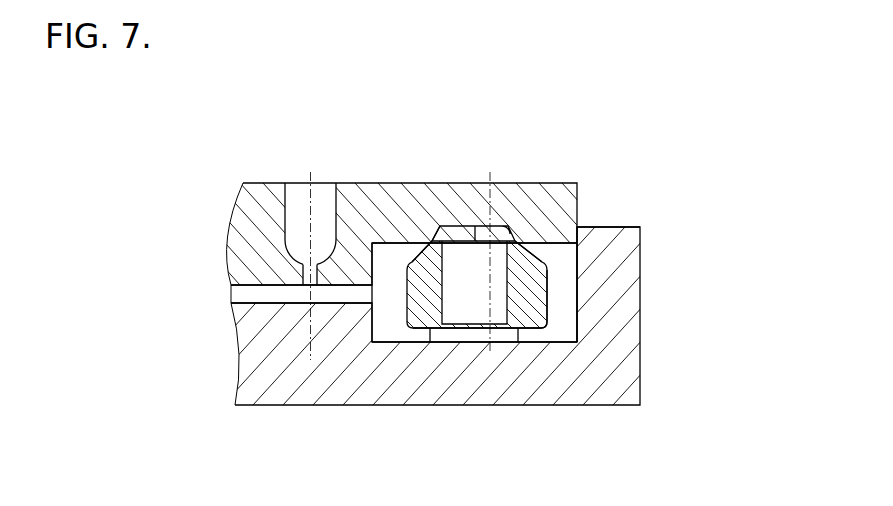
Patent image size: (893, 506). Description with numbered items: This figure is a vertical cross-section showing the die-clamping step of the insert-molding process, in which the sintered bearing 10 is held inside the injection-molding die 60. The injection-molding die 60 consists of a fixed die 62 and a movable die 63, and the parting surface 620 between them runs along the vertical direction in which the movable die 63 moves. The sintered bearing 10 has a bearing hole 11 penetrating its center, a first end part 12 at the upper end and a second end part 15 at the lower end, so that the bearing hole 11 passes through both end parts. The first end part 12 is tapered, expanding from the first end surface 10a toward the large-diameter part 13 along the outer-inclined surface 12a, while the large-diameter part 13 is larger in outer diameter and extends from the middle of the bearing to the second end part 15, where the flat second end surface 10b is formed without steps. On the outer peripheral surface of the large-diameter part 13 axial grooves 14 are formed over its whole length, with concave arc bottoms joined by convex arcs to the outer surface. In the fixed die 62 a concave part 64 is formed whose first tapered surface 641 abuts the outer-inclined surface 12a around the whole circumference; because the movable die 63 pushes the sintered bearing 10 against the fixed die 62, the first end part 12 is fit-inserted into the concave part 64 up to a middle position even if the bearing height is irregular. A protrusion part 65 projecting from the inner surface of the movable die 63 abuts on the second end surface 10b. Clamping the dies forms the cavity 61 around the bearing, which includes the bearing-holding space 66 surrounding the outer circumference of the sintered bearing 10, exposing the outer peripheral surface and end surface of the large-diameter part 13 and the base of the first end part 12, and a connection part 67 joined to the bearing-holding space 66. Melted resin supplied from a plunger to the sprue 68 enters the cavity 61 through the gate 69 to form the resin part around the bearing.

The sintered bearing 10 is at (540, 285).
The first end surface 10a is at (509, 246).
The second end surface 10b is at (540, 326).
The bearing hole 11 is at (463, 226).
The first end part 12 is at (446, 226).
The outer-inclined surface 12a is at (433, 240).
The large-diameter part 13 is at (548, 283).
The grooves 14 is at (547, 300).
The second end part 15 is at (515, 338).
The injection-molding die 60 is at (424, 285).
The cavity 61 is at (389, 264).
The fixed die 62 is at (401, 205).
The movable die 63 is at (424, 308).
The concave part 64 is at (488, 322).
The protrusion part 65 is at (402, 342).
The bearing-holding space 66 is at (567, 309).
The connection part 67 is at (245, 297).
The sprue 68 is at (323, 200).
The gate 69 is at (290, 283).
The parting surface 620 is at (579, 232).
The first tapered surface 641 is at (527, 243).